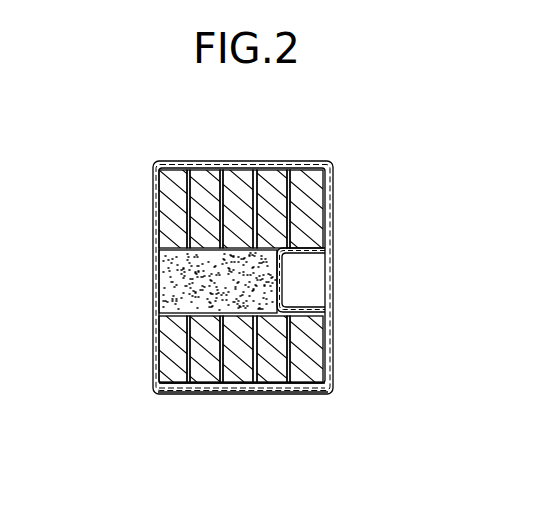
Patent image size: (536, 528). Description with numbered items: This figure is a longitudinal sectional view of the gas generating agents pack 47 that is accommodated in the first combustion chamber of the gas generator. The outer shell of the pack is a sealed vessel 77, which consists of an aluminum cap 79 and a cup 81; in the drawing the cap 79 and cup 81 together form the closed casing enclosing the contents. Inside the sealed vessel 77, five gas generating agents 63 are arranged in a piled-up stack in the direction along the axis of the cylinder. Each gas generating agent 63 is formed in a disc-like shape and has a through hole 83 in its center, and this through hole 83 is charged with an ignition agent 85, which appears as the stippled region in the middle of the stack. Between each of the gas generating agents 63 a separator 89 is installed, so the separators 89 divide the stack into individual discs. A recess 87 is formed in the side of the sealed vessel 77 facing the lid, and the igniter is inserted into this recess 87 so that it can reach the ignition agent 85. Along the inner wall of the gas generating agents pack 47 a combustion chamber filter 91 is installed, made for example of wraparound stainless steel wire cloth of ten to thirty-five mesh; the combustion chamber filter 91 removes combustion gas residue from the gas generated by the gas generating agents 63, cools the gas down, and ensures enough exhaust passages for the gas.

The gas generating agents pack 47 is at (245, 158).
The gas generating agent 63 is at (302, 183).
The separator 89 is at (200, 193).
The combustion chamber filter 91 is at (222, 196).
The through hole 83 is at (232, 306).
The ignition agent 85 is at (163, 271).
The recess 87 is at (308, 306).
The aluminum cap 79 is at (326, 360).
The cup 81 is at (297, 365).
The sealed vessel 77 is at (343, 412).